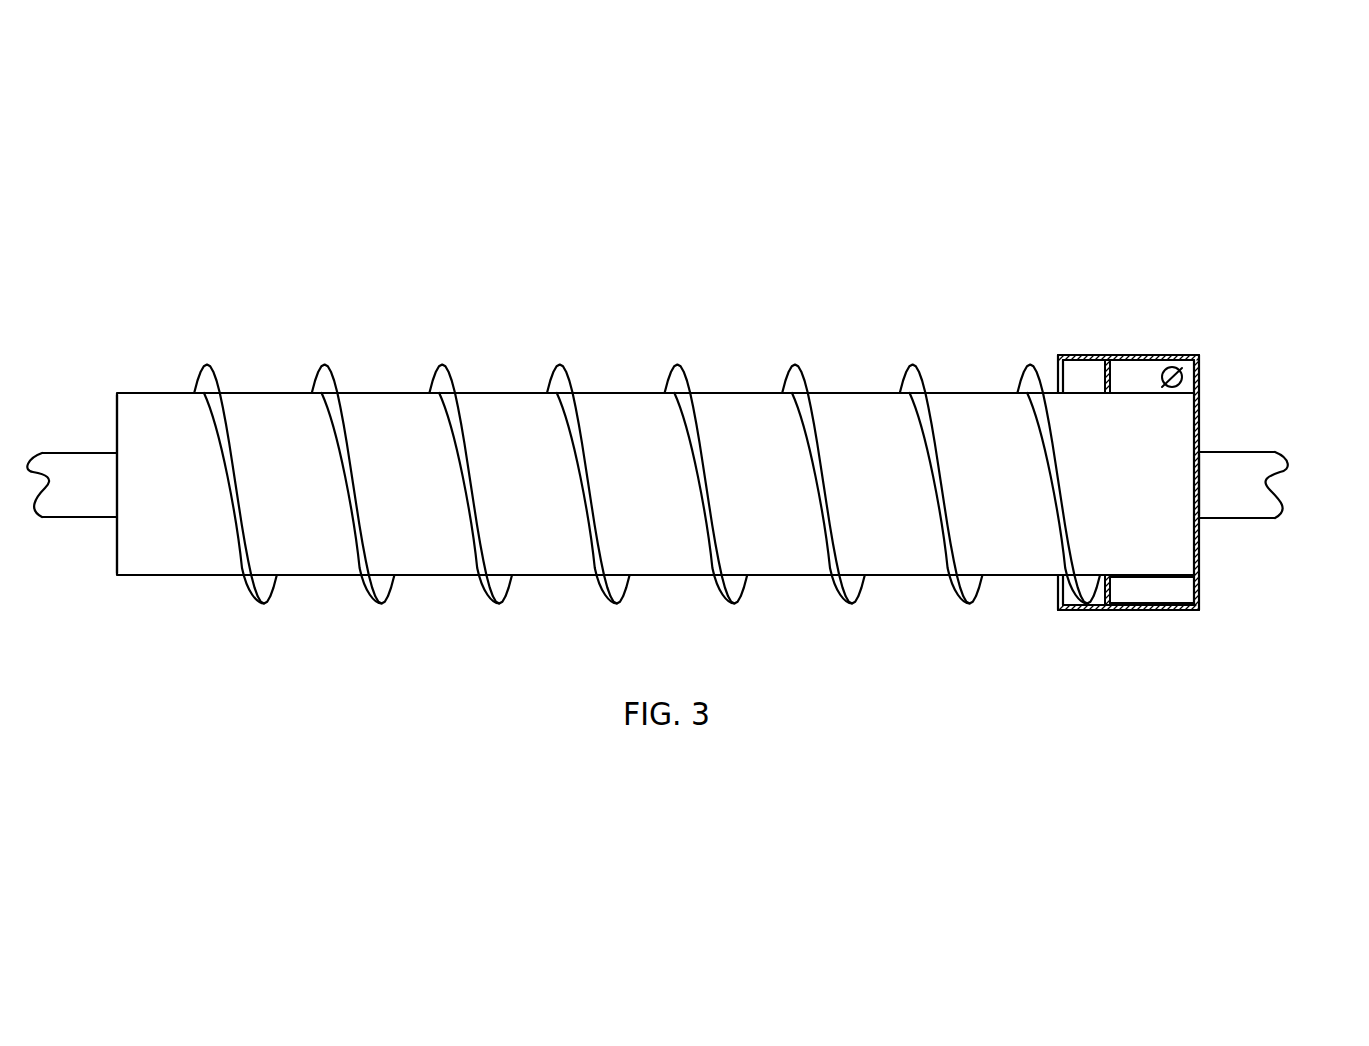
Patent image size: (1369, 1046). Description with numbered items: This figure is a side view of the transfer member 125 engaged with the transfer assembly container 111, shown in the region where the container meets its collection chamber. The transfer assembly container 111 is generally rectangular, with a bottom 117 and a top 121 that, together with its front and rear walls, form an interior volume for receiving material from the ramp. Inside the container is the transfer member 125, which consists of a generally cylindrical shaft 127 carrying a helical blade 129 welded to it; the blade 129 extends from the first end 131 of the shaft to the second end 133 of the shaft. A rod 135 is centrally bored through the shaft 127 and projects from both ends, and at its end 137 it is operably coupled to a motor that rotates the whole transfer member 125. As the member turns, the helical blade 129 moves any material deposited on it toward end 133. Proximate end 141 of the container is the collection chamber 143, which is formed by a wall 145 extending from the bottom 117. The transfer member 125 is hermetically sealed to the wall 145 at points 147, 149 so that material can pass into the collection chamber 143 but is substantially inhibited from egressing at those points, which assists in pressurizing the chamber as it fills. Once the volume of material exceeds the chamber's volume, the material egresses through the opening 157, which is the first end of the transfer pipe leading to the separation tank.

The transfer assembly container 111 is at (1093, 322).
The bottom 117 is at (1075, 613).
The top 121 is at (1074, 353).
The transfer member 125 is at (965, 170).
The shaft 127 is at (539, 453).
The blade 129 is at (670, 370).
The first end of the shaft 131 is at (165, 413).
The second end of the shaft 133 is at (1173, 415).
The rod 135 is at (93, 480).
The end of the rod 137 is at (1238, 507).
The end of the transfer assembly container 141 is at (1167, 355).
The collection chamber 143 is at (1147, 595).
The wall 145 is at (1113, 608).
The seal point 147 is at (1118, 356).
The seal point 149 is at (1133, 612).
The opening 157 is at (1184, 373).